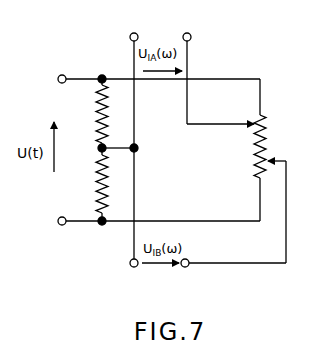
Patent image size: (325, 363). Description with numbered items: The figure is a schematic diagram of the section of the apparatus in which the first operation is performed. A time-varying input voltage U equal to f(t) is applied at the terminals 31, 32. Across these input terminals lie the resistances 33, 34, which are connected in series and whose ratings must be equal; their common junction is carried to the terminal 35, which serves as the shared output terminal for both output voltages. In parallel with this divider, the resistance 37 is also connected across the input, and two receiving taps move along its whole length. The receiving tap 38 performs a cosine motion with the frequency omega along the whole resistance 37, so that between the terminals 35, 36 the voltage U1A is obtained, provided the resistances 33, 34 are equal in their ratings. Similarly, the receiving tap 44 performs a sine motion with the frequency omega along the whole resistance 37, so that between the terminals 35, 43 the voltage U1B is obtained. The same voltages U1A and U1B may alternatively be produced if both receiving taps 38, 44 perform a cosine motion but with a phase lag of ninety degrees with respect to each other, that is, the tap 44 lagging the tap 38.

The terminal 31 is at (49, 79).
The terminal 32 is at (49, 221).
The resistance 33 is at (97, 115).
The resistance 34 is at (97, 188).
The terminal 35 is at (127, 152).
The terminal 36 is at (186, 67).
The resistance 37 is at (256, 148).
The receiving tap 38 is at (231, 123).
The terminal 43 is at (190, 276).
The receiving tap 44 is at (287, 160).